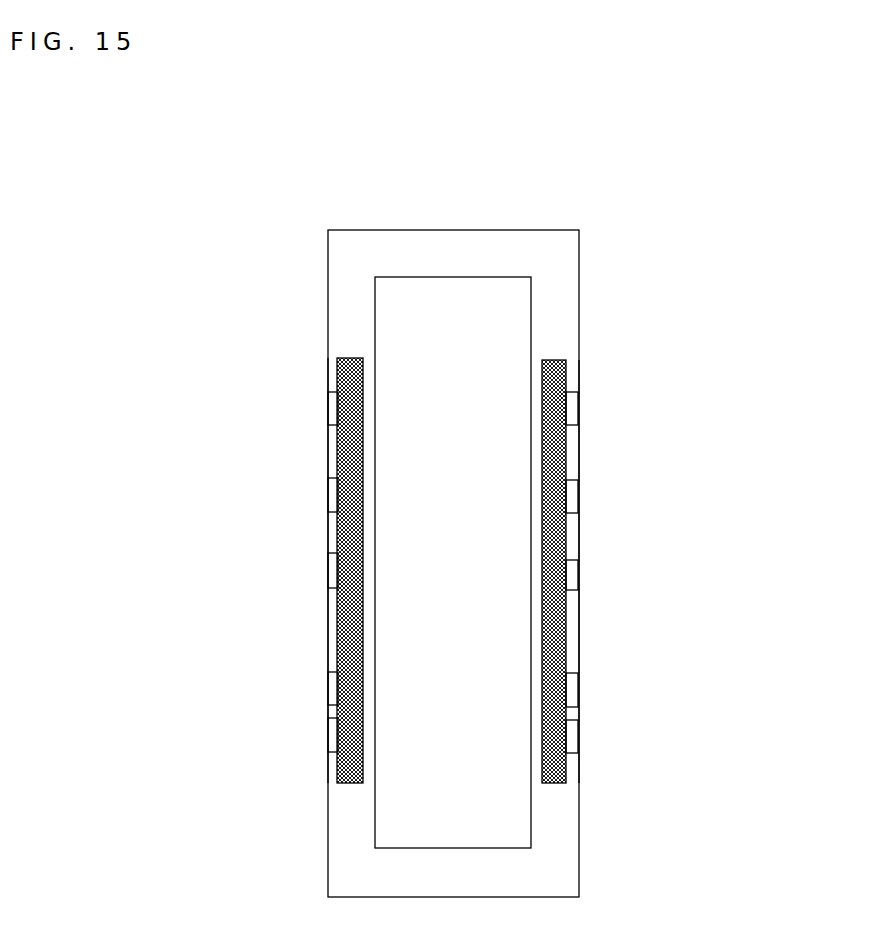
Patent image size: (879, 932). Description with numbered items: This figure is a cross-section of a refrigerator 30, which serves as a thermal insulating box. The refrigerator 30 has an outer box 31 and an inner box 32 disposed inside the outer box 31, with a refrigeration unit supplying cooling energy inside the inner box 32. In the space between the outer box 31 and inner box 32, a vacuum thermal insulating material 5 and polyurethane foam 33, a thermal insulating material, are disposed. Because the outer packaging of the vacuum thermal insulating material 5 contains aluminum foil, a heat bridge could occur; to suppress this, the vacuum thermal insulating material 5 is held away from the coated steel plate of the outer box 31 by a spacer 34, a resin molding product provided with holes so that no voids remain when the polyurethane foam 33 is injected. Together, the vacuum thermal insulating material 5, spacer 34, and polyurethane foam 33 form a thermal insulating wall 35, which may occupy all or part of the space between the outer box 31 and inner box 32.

The refrigerator 30 is at (562, 218).
The outer box 31 is at (580, 273).
The inner box 32 is at (457, 275).
The polyurethane foam 33 is at (330, 627).
The spacer 34 is at (336, 568).
The vacuum thermal insulating material 5 is at (336, 523).
The thermal insulating wall 35 is at (200, 490).